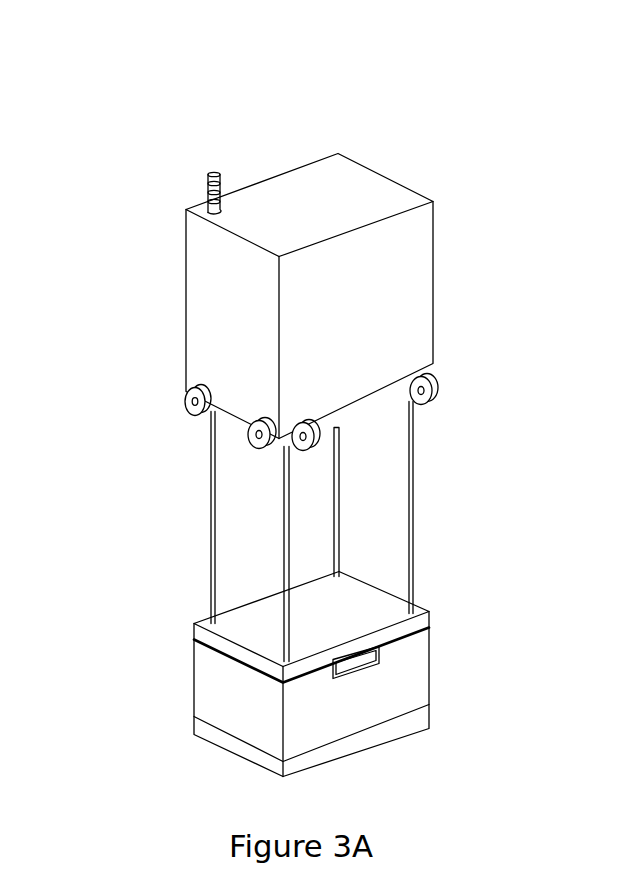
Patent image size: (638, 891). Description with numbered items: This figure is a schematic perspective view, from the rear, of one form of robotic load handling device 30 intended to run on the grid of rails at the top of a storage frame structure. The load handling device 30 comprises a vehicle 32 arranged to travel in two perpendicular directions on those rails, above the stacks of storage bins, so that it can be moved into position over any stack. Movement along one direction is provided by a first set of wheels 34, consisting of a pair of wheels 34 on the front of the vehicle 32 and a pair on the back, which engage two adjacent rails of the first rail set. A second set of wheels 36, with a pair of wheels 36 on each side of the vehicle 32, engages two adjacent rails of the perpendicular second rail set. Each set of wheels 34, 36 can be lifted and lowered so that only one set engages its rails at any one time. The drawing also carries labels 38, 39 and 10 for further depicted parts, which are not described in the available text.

The robotic load handling device 30 is at (160, 115).
The vehicle 32 is at (375, 280).
The first set of wheels 34 is at (437, 390).
The second set of wheels 36 is at (193, 390).
The cable 38 is at (412, 507).
The platform plate 39 is at (373, 612).
The container 10 is at (400, 692).